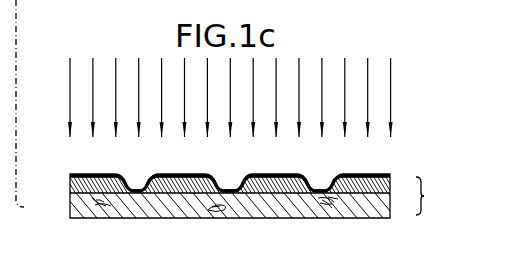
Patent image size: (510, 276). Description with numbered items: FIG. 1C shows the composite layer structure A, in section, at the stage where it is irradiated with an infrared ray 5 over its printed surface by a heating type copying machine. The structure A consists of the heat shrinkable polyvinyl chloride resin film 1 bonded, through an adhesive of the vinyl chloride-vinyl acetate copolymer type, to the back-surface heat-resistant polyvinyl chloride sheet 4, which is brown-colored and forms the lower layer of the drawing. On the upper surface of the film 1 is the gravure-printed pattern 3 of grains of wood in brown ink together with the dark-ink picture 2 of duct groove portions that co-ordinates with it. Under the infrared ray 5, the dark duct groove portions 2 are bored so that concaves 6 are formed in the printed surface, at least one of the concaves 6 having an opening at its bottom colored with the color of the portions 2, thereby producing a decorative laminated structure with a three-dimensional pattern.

The heat shrinkable polyvinyl chloride resin film 1 is at (270, 190).
The picture of duct groove portions 2 is at (143, 194).
The pattern of grains of wood 3 is at (192, 178).
The heat-resistant polyvinyl chloride sheet 4 is at (348, 205).
The infrared ray 5 is at (343, 97).
The concaves 6 is at (317, 183).
The composite layer structure A is at (430, 196).